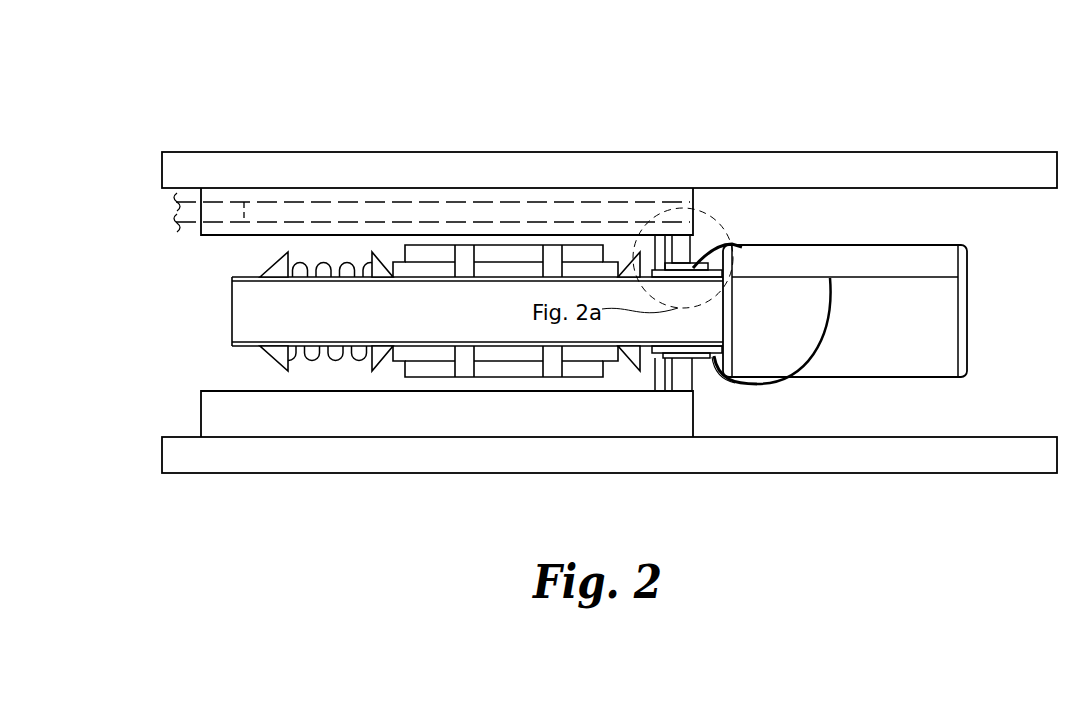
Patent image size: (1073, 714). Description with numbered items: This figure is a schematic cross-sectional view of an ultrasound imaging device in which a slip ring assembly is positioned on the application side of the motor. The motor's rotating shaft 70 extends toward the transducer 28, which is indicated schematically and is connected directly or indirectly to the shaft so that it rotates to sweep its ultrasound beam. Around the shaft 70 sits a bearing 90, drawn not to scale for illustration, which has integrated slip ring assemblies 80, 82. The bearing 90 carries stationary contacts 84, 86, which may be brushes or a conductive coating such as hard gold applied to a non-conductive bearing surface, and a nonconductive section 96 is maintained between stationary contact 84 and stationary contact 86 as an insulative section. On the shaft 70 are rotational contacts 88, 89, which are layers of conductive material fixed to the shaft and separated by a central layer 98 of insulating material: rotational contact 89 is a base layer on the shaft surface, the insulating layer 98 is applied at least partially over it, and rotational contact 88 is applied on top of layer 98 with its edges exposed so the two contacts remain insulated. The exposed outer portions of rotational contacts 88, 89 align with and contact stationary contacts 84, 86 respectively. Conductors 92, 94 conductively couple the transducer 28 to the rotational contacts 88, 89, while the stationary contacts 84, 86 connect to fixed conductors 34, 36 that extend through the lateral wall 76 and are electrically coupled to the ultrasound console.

The transducer 28 is at (938, 230).
The fixed conductor 34 is at (218, 200).
The fixed conductor 36 is at (244, 200).
The rotating shaft 70 is at (247, 277).
The lateral wall 76 is at (402, 222).
The slip ring assembly 80 is at (708, 187).
The slip ring assembly 82 is at (628, 237).
The stationary contact 84 is at (681, 255).
The stationary contact 86 is at (663, 258).
The rotational contact 88 is at (685, 365).
The rotational contact 89 is at (655, 358).
The bearing 90 is at (714, 394).
The conductor 92 is at (730, 240).
The conductor 94 is at (806, 368).
The nonconductive section 96 is at (667, 378).
The central layer 98 is at (695, 368).